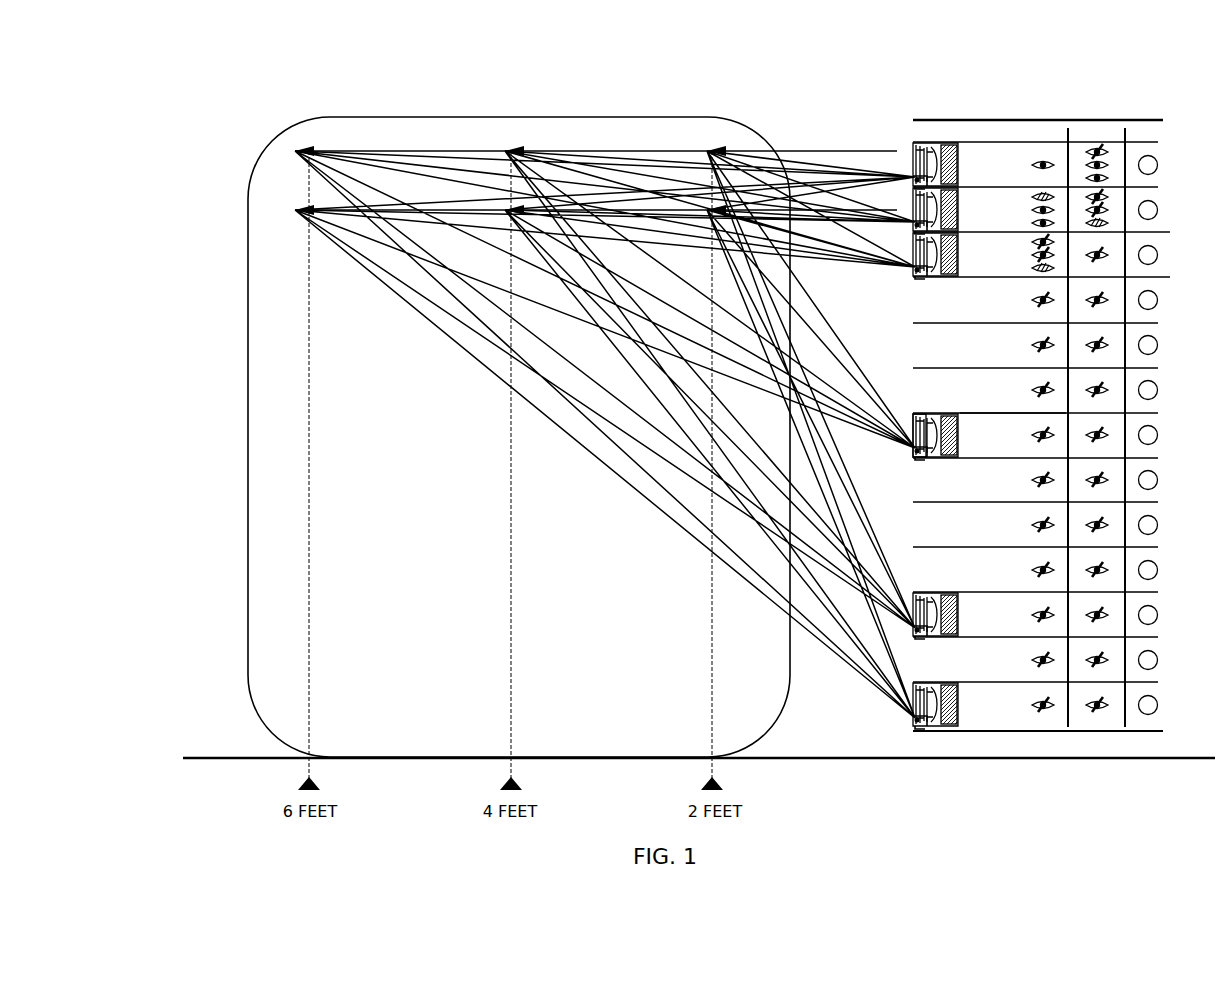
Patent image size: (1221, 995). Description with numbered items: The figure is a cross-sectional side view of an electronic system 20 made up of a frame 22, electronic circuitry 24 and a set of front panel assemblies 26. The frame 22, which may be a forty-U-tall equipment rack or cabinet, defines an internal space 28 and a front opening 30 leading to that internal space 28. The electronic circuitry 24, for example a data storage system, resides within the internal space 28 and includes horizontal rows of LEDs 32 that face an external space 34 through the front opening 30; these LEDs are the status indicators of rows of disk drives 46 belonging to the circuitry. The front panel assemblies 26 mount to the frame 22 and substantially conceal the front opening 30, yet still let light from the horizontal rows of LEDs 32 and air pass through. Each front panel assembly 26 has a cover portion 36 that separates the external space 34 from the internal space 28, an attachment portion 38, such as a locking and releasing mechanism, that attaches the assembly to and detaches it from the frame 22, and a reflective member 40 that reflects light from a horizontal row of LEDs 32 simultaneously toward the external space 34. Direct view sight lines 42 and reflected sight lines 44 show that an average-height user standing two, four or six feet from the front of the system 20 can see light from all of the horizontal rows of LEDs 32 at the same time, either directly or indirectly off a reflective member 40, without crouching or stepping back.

The electronic system 20 is at (1031, 390).
The frame 22 is at (1085, 120).
The electronic circuitry 24 is at (982, 152).
The front panel assemblies 26 is at (895, 150).
The internal space 28 is at (997, 419).
The front opening 30 is at (917, 352).
The horizontal rows of LEDs 32 is at (906, 281).
The external space 34 is at (246, 368).
The cover portion 36 is at (930, 415).
The attachment portion 38 is at (913, 436).
The reflective member 40 is at (913, 453).
The direct view sight lines 42 is at (812, 151).
The reflected sight lines 44 is at (845, 674).
The disk drives 46 is at (960, 442).